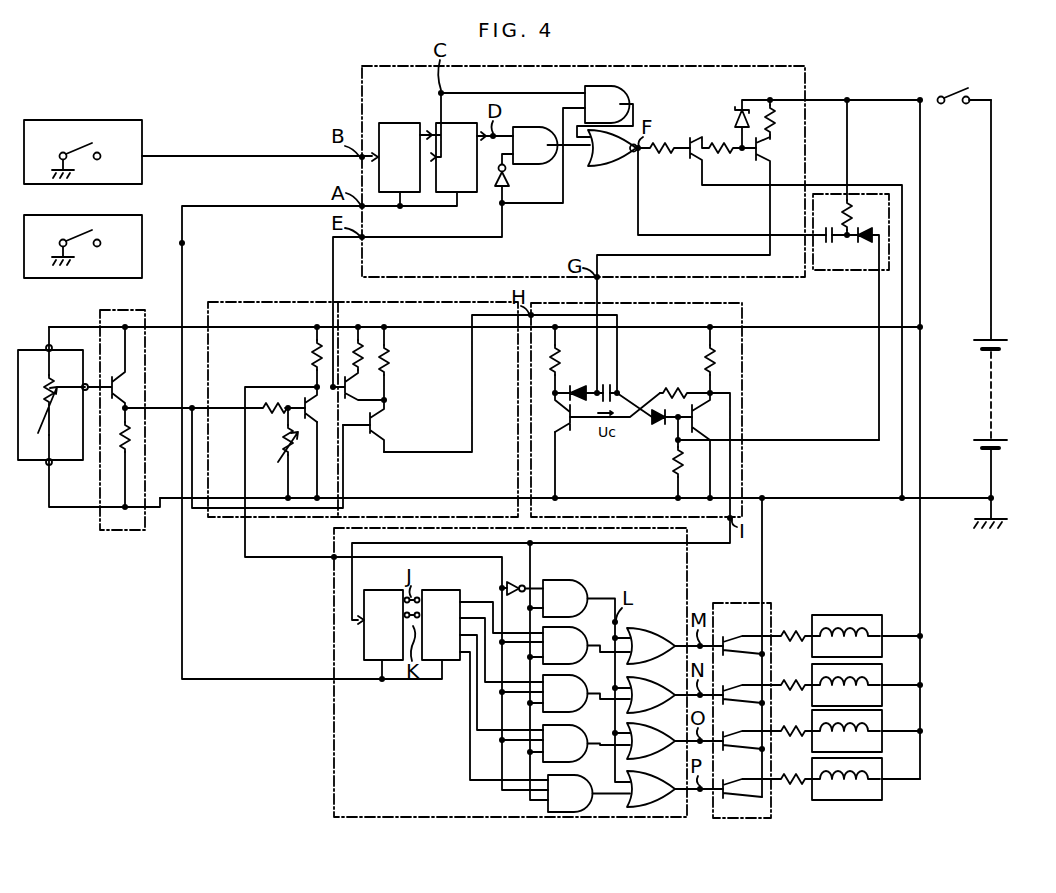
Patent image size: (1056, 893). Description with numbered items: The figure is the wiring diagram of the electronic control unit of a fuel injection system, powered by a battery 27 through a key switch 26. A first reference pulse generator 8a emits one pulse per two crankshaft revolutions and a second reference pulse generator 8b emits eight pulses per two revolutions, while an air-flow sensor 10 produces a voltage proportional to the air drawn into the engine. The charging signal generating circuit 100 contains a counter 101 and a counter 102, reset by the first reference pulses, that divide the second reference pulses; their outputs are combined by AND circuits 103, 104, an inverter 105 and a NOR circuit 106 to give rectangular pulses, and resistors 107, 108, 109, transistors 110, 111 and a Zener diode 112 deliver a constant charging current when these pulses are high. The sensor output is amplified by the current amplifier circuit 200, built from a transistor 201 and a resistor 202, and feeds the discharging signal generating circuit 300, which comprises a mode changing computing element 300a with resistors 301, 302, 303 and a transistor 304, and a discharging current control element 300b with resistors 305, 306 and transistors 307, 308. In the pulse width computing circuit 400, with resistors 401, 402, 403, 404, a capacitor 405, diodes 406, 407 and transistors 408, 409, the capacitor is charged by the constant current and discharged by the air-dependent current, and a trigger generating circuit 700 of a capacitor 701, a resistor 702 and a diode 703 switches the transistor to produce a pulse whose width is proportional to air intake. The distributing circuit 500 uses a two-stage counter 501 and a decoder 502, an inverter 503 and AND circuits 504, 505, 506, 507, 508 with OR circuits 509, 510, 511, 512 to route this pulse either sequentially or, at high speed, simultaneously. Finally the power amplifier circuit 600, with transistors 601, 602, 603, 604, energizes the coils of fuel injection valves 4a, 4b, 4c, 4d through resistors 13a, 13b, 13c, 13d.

The first reference pulse generator 8a is at (155, 217).
The second reference pulse generator 8b is at (142, 128).
The air-flow sensor 10 is at (30, 465).
The key switch 26 is at (954, 96).
The battery 27 is at (991, 402).
The charging signal generating circuit 100 is at (356, 82).
The counter 101 is at (403, 113).
The counter 102 is at (440, 124).
The AND circuit 103 is at (535, 131).
The AND circuit 104 is at (602, 86).
The inverter 105 is at (508, 168).
The NOR circuit 106 is at (607, 166).
The resistor 107 is at (663, 154).
The resistor 108 is at (721, 152).
The resistor 109 is at (778, 123).
The transistor 110 is at (696, 136).
The transistor 111 is at (769, 146).
The Zener diode 112 is at (745, 108).
The current amplifier circuit 200 is at (158, 306).
The transistor 201 is at (122, 384).
The resistor 202 is at (116, 460).
The discharging signal generating circuit 300 is at (245, 304).
The mode changing computing element 300a is at (246, 524).
The discharging current control element 300b is at (442, 262).
The resistor 301 is at (272, 402).
The resistor 302 is at (282, 453).
The resistor 303 is at (312, 352).
The transistor 304 is at (312, 428).
The resistor 305 is at (356, 350).
The resistor 306 is at (386, 362).
The transistor 307 is at (358, 416).
The transistor 308 is at (378, 426).
The pulse width computing circuit 400 is at (642, 303).
The resistor 401 is at (547, 366).
The resistor 402 is at (676, 386).
The resistor 403 is at (718, 370).
The resistor 404 is at (672, 468).
The capacitor 405 is at (608, 382).
The diode 406 is at (656, 424).
The diode 407 is at (576, 384).
The transistor 408 is at (705, 417).
The transistor 409 is at (571, 428).
The distributing circuit 500 is at (333, 744).
The two-stage counter 501 is at (361, 637).
The decoder 502 is at (466, 586).
The inverter 503 is at (522, 584).
The AND circuit 504 is at (597, 584).
The AND circuit 505 is at (597, 632).
The AND circuit 506 is at (512, 672).
The AND circuit 507 is at (512, 720).
The AND circuit 508 is at (572, 813).
The OR circuit 509 is at (632, 634).
The OR circuit 510 is at (597, 682).
The OR circuit 511 is at (597, 732).
The OR circuit 512 is at (597, 779).
The power amplifier circuit 600 is at (772, 792).
The transistor 601 is at (741, 632).
The transistor 602 is at (741, 682).
The transistor 603 is at (741, 729).
The transistor 604 is at (741, 775).
The trigger generating circuit 700 is at (878, 194).
The capacitor 701 is at (826, 246).
The resistor 702 is at (850, 199).
The diode 703 is at (866, 246).
The resistor 13a is at (792, 628).
The resistor 13b is at (792, 777).
The resistor 13c is at (792, 681).
The resistor 13d is at (792, 716).
The fuel injection valve 4a is at (870, 635).
The fuel injection valve 4b is at (870, 778).
The fuel injection valve 4c is at (870, 686).
The fuel injection valve 4d is at (870, 733).